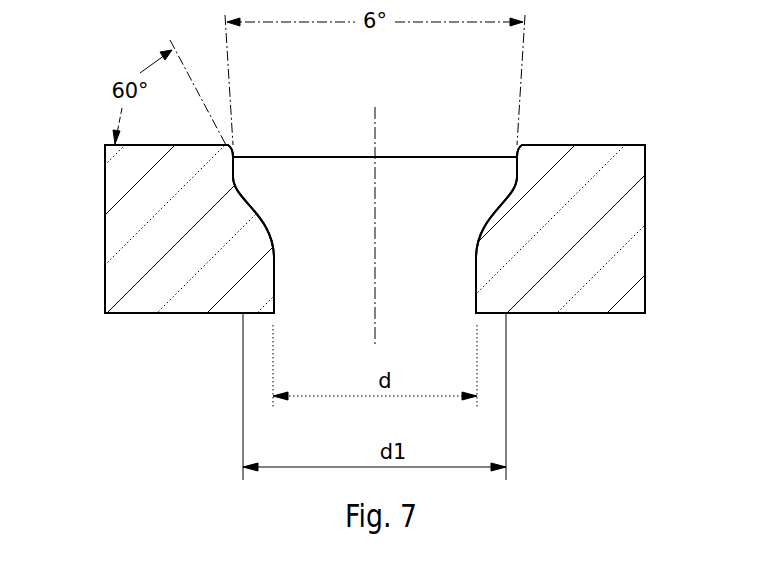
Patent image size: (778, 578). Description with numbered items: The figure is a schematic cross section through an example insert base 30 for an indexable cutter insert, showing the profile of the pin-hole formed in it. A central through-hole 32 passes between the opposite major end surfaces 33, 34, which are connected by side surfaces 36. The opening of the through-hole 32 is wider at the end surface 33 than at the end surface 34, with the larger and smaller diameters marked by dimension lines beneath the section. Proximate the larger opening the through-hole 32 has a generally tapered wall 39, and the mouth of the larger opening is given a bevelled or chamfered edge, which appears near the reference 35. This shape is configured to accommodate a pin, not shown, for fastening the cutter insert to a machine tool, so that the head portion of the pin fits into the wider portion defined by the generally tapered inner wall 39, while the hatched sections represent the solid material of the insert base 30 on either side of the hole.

The insert base 30 is at (135, 225).
The central through-hole 32 is at (448, 195).
The major end surface 33 is at (552, 145).
The major end surface 34 is at (548, 313).
The outer edge 35 is at (645, 145).
The side surfaces 36 is at (645, 225).
The generally tapered wall 39 is at (233, 166).